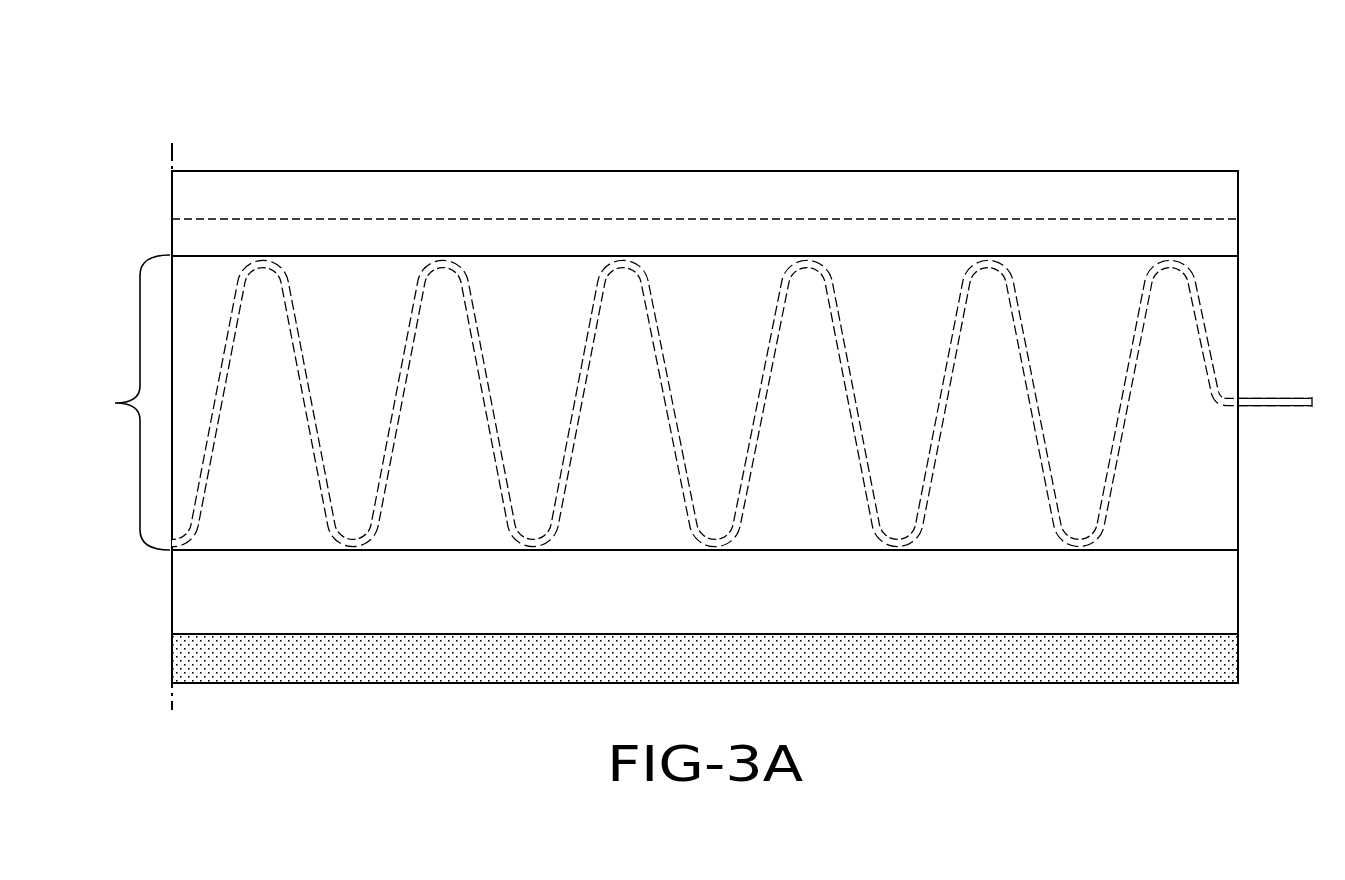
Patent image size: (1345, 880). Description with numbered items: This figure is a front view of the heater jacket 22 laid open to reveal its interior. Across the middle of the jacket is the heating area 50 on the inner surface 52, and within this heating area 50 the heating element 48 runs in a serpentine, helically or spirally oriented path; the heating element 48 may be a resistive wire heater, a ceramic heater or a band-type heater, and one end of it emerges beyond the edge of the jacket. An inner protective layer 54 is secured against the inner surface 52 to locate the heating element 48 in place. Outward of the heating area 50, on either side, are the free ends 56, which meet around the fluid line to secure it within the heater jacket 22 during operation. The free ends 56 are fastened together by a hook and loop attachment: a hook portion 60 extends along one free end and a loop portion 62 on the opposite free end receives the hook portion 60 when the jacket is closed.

The heater jacket 22 is at (1172, 150).
The heating element 48 is at (1205, 330).
The heating area 50 is at (123, 402).
The inner surface 52 is at (1174, 517).
The inner protective layer 54 is at (1193, 472).
The free ends 56 is at (900, 228).
The hook portion 60 is at (1092, 665).
The loop portion 62 is at (237, 190).